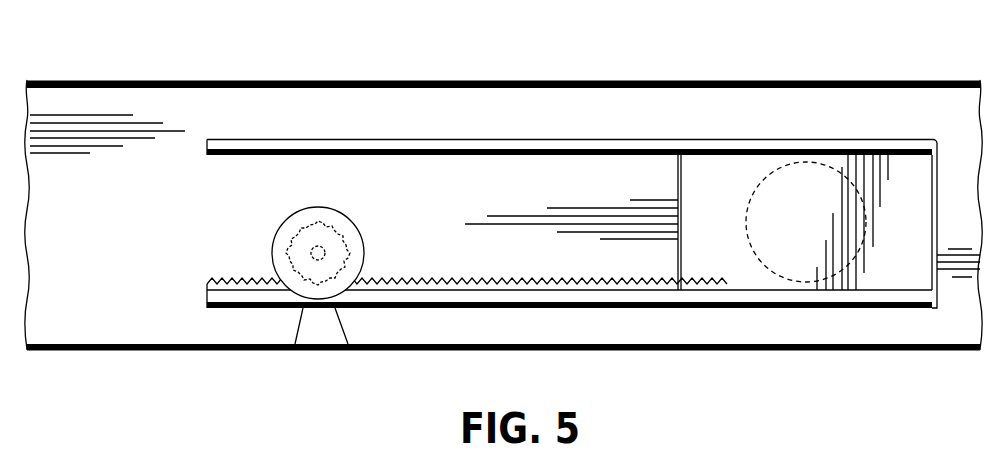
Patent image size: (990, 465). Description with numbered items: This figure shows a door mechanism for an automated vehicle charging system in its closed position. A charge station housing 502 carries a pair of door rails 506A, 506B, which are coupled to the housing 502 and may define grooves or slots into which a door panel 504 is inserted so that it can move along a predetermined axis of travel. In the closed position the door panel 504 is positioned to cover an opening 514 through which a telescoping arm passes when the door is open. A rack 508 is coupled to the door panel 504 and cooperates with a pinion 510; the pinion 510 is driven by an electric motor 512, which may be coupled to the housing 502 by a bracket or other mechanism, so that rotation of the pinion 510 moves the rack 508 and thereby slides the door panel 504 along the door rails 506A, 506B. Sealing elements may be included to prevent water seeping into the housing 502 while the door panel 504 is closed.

The charge station housing 502 is at (778, 81).
The door panel 504 is at (678, 190).
The door rail 506A is at (560, 138).
The door rail 506B is at (543, 308).
The rack 508 is at (448, 278).
The pinion 510 is at (272, 240).
The electric motor 512 is at (316, 208).
The opening 514 is at (772, 172).